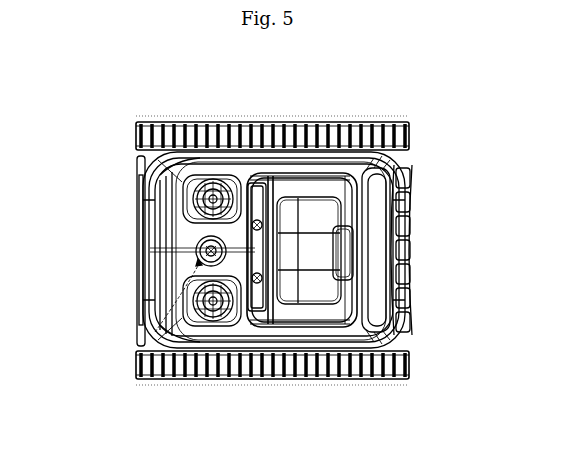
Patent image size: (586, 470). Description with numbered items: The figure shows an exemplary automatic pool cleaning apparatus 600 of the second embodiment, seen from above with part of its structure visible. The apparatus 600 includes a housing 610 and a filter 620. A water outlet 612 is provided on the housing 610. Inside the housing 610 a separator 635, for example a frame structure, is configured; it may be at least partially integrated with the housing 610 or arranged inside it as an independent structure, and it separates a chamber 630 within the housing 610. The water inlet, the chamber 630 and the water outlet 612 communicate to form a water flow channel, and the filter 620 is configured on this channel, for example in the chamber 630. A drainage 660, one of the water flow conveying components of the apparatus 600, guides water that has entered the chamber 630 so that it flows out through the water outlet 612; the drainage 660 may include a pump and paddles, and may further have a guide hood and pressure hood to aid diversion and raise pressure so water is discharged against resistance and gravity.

The automatic pool cleaning apparatus 600 is at (268, 118).
The housing 610 is at (145, 298).
The water outlet 612 is at (192, 198).
The filter 620 is at (304, 296).
The chamber 630 is at (305, 213).
The separator 635 is at (400, 255).
The drainage 660 is at (193, 250).